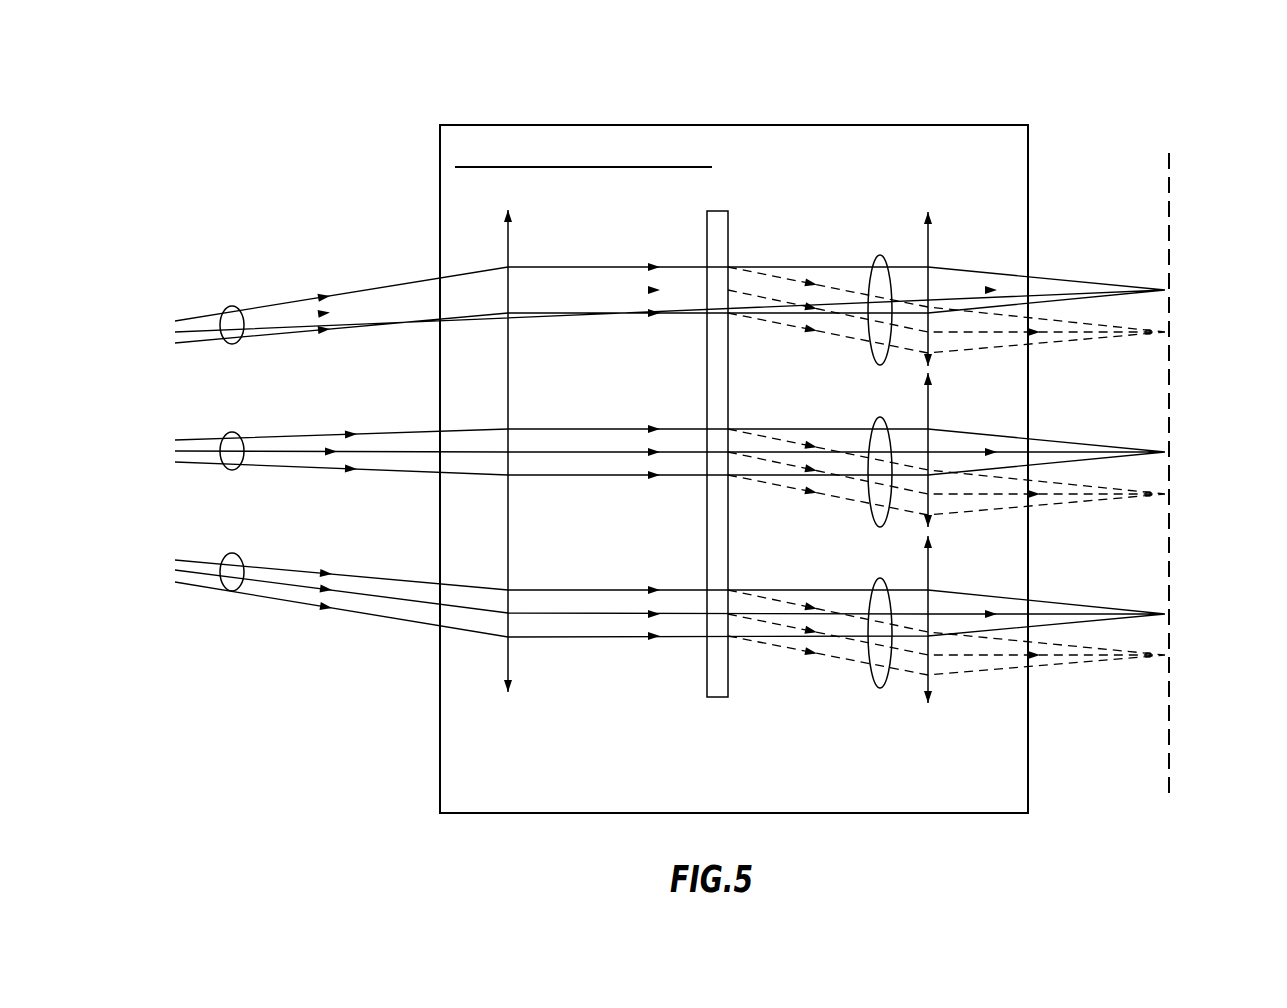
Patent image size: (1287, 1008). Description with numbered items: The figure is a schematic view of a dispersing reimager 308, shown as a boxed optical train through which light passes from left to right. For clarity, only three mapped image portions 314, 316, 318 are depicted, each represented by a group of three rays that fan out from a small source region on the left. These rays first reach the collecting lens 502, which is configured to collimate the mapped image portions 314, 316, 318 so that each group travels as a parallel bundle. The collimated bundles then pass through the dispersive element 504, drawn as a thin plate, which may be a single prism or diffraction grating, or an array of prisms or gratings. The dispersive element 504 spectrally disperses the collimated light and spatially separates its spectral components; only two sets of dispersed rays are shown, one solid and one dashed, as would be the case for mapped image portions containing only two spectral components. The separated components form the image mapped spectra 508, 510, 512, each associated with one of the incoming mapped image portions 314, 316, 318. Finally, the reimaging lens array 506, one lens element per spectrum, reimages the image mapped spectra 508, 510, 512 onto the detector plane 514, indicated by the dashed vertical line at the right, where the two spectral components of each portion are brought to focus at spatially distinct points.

The dispersing reimager 308 is at (1122, 112).
The mapped image portion 314 is at (228, 308).
The mapped image portion 316 is at (227, 433).
The mapped image portion 318 is at (227, 592).
The collecting lens 502 is at (508, 663).
The dispersive element 504 is at (707, 677).
The reimaging lens array 506 is at (925, 683).
The image mapped spectrum 508 is at (880, 256).
The image mapped spectrum 510 is at (883, 418).
The image mapped spectrum 512 is at (883, 580).
The detector plane 514 is at (1172, 218).